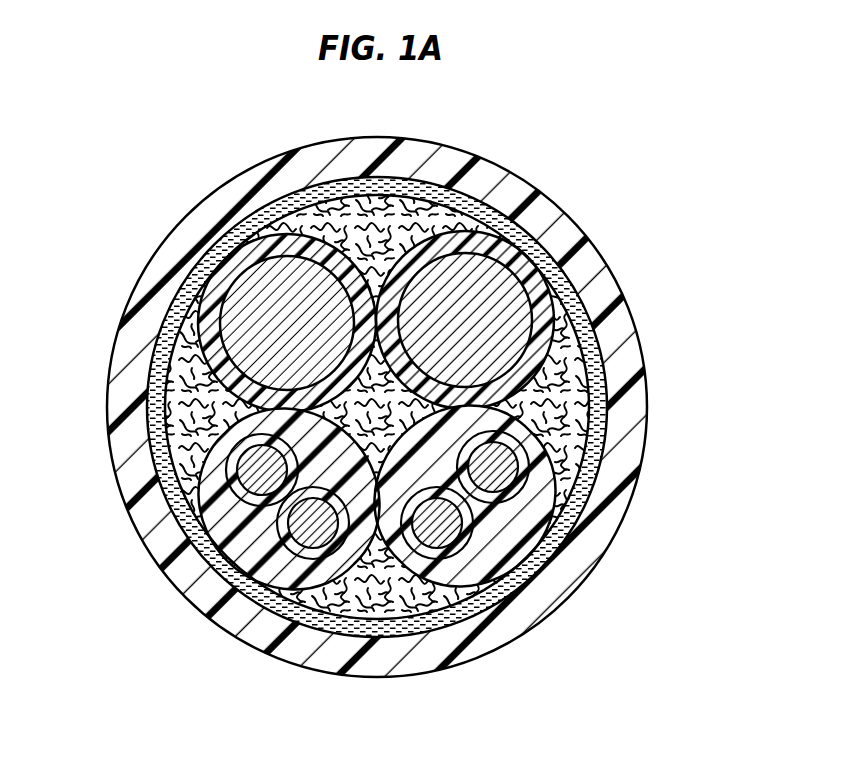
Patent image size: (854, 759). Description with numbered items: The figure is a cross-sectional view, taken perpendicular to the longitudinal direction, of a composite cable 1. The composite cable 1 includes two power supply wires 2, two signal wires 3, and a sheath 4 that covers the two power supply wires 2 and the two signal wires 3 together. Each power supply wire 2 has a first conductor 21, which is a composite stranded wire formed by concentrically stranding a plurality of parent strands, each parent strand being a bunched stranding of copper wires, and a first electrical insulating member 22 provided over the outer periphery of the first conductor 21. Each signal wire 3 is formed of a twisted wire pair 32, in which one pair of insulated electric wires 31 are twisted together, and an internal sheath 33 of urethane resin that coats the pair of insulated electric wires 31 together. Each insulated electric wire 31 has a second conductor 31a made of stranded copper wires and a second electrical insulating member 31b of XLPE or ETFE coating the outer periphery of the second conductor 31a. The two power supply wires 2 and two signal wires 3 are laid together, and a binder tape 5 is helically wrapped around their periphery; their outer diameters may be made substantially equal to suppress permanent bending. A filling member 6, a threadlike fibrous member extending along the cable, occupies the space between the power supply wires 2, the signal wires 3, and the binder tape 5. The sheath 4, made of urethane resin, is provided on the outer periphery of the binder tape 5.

The composite cable 1 is at (158, 122).
The power supply wire 2 is at (381, 286).
The first conductor 21 is at (505, 282).
The first electrical insulating member 22 is at (527, 296).
The signal wire 3 is at (412, 486).
The insulated electric wire 31 is at (494, 495).
The second conductor 31a is at (503, 472).
The second electrical insulating member 31b is at (520, 493).
The twisted wire pair 32 is at (553, 512).
The internal sheath 33 is at (528, 537).
The sheath 4 is at (525, 605).
The binder tape 5 is at (453, 617).
The filling member 6 is at (342, 615).